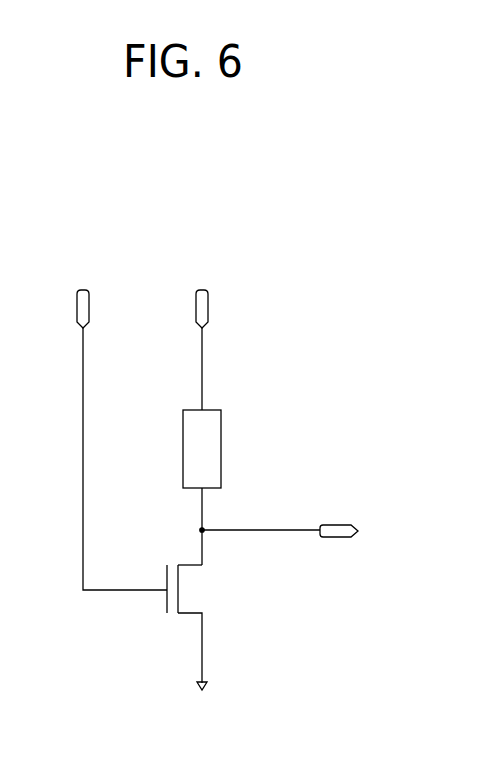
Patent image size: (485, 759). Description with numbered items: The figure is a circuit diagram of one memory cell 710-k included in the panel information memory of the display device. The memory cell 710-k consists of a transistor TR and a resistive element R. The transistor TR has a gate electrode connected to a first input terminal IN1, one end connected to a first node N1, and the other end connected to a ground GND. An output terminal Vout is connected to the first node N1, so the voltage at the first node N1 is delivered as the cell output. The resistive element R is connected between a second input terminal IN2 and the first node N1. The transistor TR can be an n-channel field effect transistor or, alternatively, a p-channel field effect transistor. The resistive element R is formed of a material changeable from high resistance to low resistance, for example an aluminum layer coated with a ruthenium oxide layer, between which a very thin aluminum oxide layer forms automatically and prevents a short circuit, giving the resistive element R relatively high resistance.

The memory cell 710-k is at (285, 333).
The first input terminal IN1 is at (117, 425).
The second input terminal IN2 is at (202, 335).
The resistive element R is at (202, 487).
The first node N1 is at (244, 533).
The output terminal Vout is at (338, 518).
The transistor TR is at (189, 624).
The ground GND is at (202, 704).